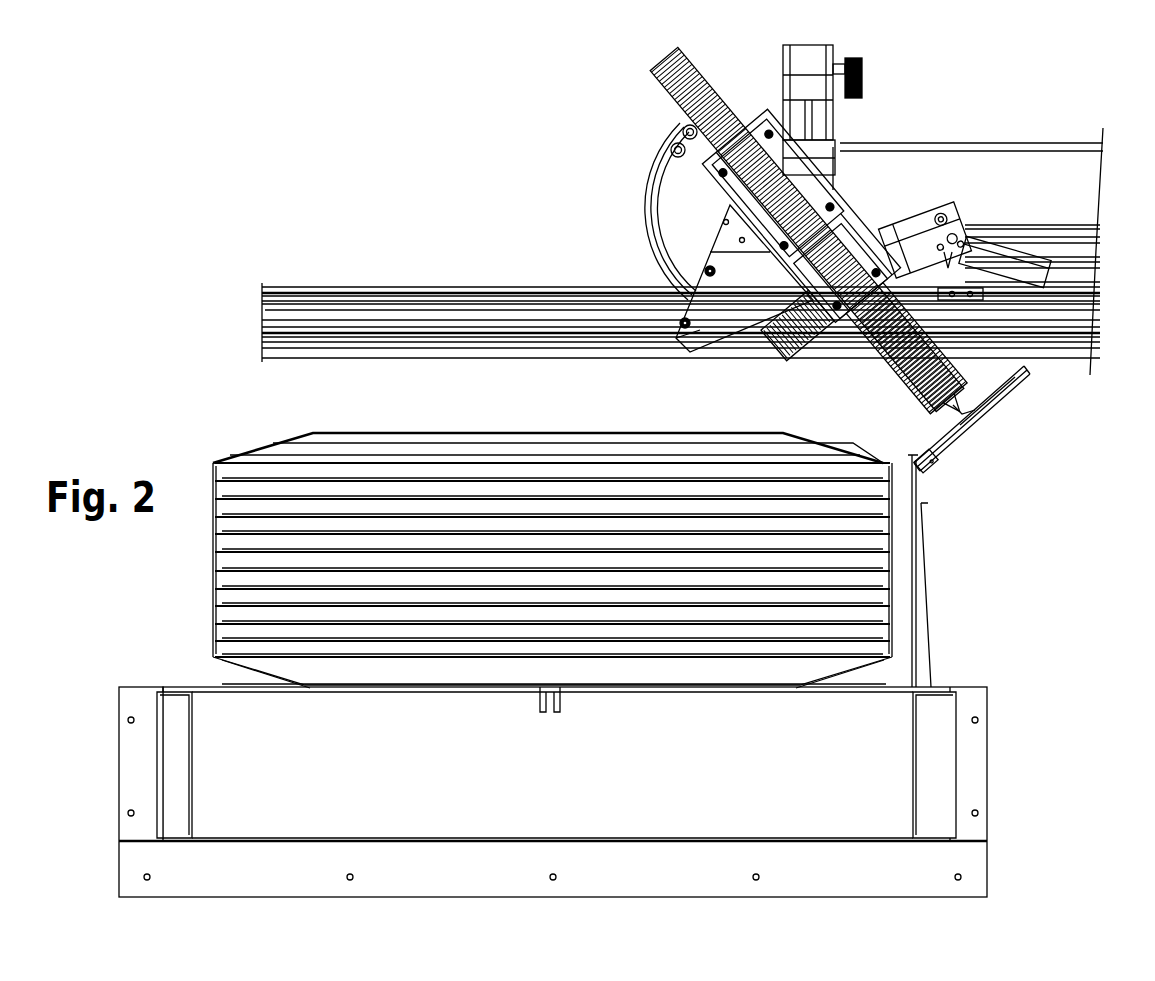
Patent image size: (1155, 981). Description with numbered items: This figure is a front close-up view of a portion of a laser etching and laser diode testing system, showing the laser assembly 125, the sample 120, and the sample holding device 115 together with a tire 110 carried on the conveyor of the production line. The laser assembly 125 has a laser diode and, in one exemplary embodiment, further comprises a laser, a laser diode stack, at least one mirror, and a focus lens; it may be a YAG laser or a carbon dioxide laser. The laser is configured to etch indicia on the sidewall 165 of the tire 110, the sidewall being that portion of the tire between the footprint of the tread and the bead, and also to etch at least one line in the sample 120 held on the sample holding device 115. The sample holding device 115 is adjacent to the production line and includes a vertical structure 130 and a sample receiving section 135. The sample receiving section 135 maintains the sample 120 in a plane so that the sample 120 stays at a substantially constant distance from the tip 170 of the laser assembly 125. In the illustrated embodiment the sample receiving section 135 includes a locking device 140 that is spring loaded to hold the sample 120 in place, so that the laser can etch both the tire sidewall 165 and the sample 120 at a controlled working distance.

The tire 110 is at (498, 432).
The sample holding device 115 is at (917, 457).
The sample 120 is at (983, 418).
The laser assembly 125 is at (695, 66).
The vertical structure 130 is at (930, 640).
The sample receiving section 135 is at (1040, 383).
The locking device 140 is at (936, 464).
The sidewall 165 is at (280, 456).
The tip 170 is at (997, 390).